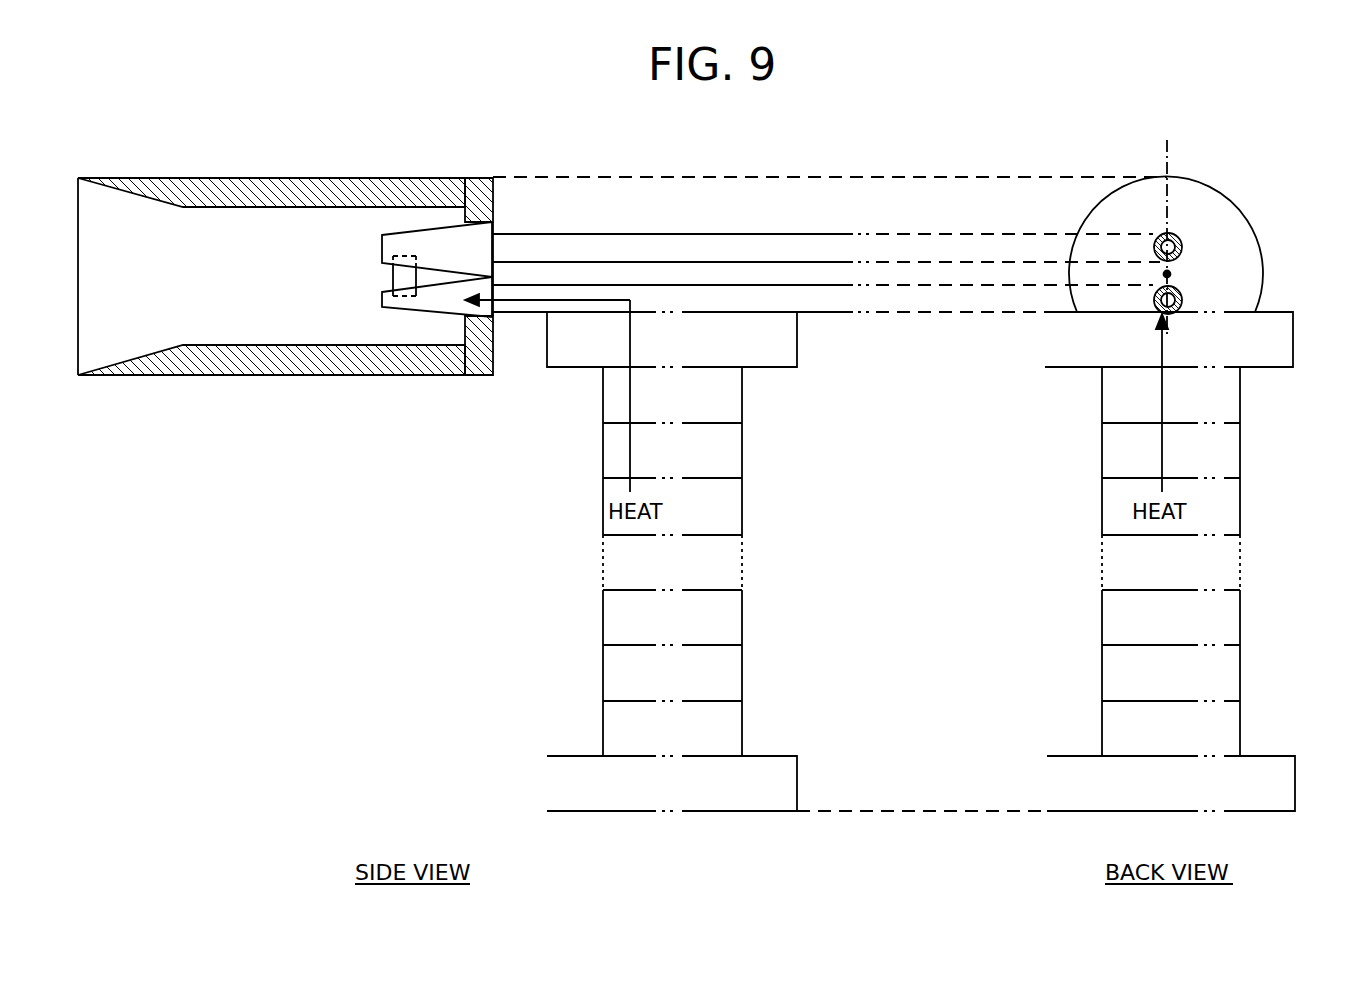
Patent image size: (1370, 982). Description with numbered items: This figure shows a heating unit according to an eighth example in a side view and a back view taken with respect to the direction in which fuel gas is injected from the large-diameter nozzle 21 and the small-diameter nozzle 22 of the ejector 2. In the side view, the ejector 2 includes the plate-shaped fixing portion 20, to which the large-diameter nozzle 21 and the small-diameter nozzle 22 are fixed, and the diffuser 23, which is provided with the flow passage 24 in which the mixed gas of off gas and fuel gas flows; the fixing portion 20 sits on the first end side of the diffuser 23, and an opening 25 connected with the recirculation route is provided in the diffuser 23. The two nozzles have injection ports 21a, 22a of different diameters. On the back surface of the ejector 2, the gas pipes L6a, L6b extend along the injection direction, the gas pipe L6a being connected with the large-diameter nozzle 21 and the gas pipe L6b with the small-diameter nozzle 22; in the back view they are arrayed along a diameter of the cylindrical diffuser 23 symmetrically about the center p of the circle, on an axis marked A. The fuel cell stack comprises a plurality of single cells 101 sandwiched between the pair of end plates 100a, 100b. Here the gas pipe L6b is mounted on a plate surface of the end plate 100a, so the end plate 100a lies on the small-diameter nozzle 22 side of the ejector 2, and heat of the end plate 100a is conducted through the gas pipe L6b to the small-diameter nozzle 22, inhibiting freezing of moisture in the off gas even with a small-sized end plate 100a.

The ejector 2 is at (540, 167).
The fixing portion 20 is at (480, 178).
The large-diameter nozzle 21 is at (493, 232).
The injection port 21a is at (384, 240).
The small-diameter nozzle 22 is at (495, 263).
The injection port 22a is at (383, 306).
The diffuser 23 is at (306, 178).
The flow passage 24 is at (237, 290).
The opening 25 is at (410, 256).
The gas pipe L6a is at (682, 233).
The gas pipe L6b is at (680, 285).
The center of a circle p is at (1170, 272).
The axis A is at (1165, 223).
The end plate 100a is at (797, 353).
The end plate 100b is at (797, 775).
The single cells 101 is at (742, 408).